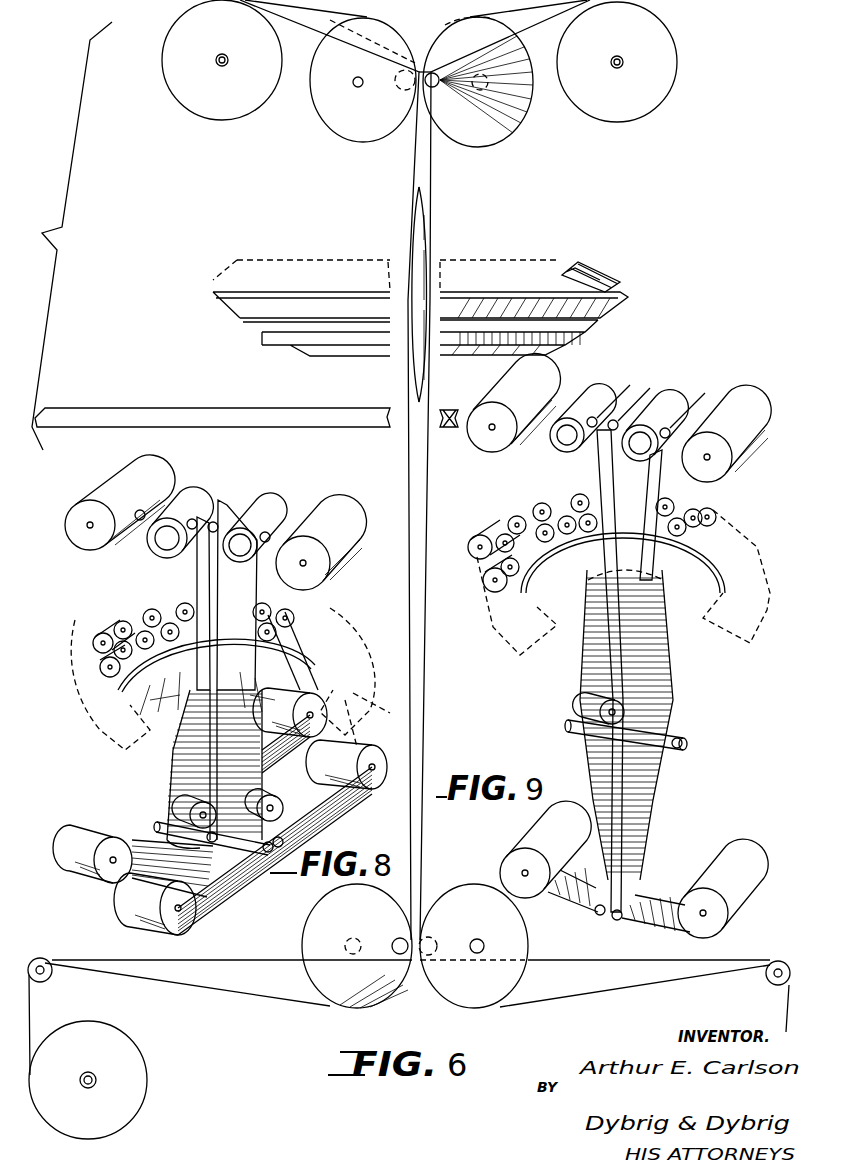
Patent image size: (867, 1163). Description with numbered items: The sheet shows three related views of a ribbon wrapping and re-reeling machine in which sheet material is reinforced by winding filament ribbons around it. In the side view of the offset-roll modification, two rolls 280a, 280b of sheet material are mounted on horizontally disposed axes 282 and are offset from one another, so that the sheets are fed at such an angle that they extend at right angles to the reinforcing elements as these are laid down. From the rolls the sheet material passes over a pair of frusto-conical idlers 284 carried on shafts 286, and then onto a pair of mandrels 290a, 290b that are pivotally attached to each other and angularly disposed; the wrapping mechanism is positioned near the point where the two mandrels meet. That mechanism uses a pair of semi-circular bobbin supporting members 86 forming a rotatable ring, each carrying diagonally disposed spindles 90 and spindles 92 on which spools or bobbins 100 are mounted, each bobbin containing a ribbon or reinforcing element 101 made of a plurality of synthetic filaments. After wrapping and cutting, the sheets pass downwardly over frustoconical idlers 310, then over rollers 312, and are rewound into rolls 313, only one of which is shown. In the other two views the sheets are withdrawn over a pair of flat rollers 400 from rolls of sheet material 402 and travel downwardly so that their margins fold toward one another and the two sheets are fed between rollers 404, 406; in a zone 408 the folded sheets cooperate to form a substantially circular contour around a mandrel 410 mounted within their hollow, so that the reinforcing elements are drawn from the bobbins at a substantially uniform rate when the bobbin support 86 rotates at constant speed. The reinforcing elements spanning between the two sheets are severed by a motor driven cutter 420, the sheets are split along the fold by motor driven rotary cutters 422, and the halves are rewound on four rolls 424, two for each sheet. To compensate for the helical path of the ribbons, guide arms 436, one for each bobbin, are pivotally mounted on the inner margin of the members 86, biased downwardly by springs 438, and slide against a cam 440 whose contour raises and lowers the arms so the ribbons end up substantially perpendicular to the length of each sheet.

In FIG. 6, the roll 280a is at (164, 52).
In FIG. 6, the roll 280b is at (662, 57).
In FIG. 6, the horizontally disposed axes 282 is at (222, 66).
In FIG. 6, the frusto-conical idlers 284 is at (366, 136).
In FIG. 6, the shafts 286 is at (426, 68).
In FIG. 6, the mandrel 290a is at (410, 207).
In FIG. 6, the mandrel 290b is at (432, 207).
In FIG. 6, the bobbin supporting members 86 is at (628, 297).
In FIG. 8, the bobbin supporting members 86 is at (70, 715).
In FIG. 9, the bobbin supporting members 86 is at (705, 558).
In FIG. 6, the spool or bobbin 100 is at (597, 268).
In FIG. 8, the spool or bobbin 100 is at (92, 648).
In FIG. 9, the spool or bobbin 100 is at (508, 525).
In FIG. 8, the reinforcing element 101 is at (178, 735).
In FIG. 9, the reinforcing element 101 is at (655, 638).
In FIG. 6, the frusto-conical idlers 310 is at (330, 921).
In FIG. 6, the rollers 312 is at (50, 978).
In FIG. 6, the roll 313 is at (133, 1072).
In FIG. 8, the spindles 92 is at (118, 630).
In FIG. 9, the spindles 92 is at (545, 512).
In FIG. 9, the spindles 90 is at (548, 540).
In FIG. 8, the flat rollers 400 is at (230, 497).
In FIG. 9, the flat rollers 400 is at (648, 398).
In FIG. 8, the rolls of sheet material 402 is at (150, 486).
In FIG. 9, the rolls of sheet material 402 is at (560, 380).
In FIG. 8, the roller 404 is at (265, 855).
In FIG. 9, the roller 404 is at (692, 736).
In FIG. 8, the roller 406 is at (285, 845).
In FIG. 9, the roller 406 is at (680, 745).
In FIG. 8, the zone 408 is at (140, 725).
In FIG. 8, the mandrel 410 is at (205, 700).
In FIG. 9, the mandrel 410 is at (612, 580).
In FIG. 8, the motor driven cutter 420 is at (178, 802).
In FIG. 9, the motor driven cutter 420 is at (578, 712).
In FIG. 8, the motor driven rotary cutters 422 is at (275, 800).
In FIG. 8, the rolls 424 is at (315, 714).
In FIG. 9, the rolls 424 is at (634, 869).
In FIG. 8, the guide arms 436 is at (290, 640).
In FIG. 8, the springs 438 is at (305, 650).
In FIG. 8, the cam 440 is at (262, 700).